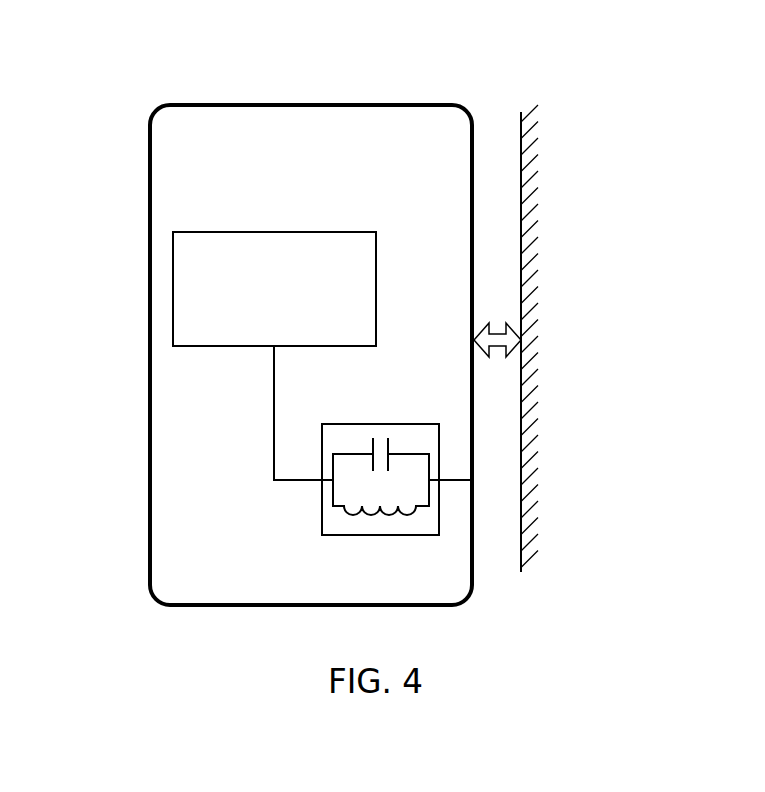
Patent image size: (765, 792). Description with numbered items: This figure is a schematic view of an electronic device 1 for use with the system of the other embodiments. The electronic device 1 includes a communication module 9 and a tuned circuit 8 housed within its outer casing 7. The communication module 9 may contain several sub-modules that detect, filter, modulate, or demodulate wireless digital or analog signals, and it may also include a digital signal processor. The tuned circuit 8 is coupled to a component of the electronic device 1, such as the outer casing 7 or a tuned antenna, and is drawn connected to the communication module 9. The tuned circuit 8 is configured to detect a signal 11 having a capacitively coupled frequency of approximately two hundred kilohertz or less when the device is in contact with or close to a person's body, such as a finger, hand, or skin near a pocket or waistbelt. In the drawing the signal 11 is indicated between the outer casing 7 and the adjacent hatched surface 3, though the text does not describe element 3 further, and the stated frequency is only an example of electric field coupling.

The outer casing 7 is at (186, 104).
The electronic device 1 is at (187, 153).
The communication module 9 is at (173, 254).
The tuned circuit 8 is at (322, 510).
The wall 3 is at (521, 540).
The signal 11 is at (491, 351).